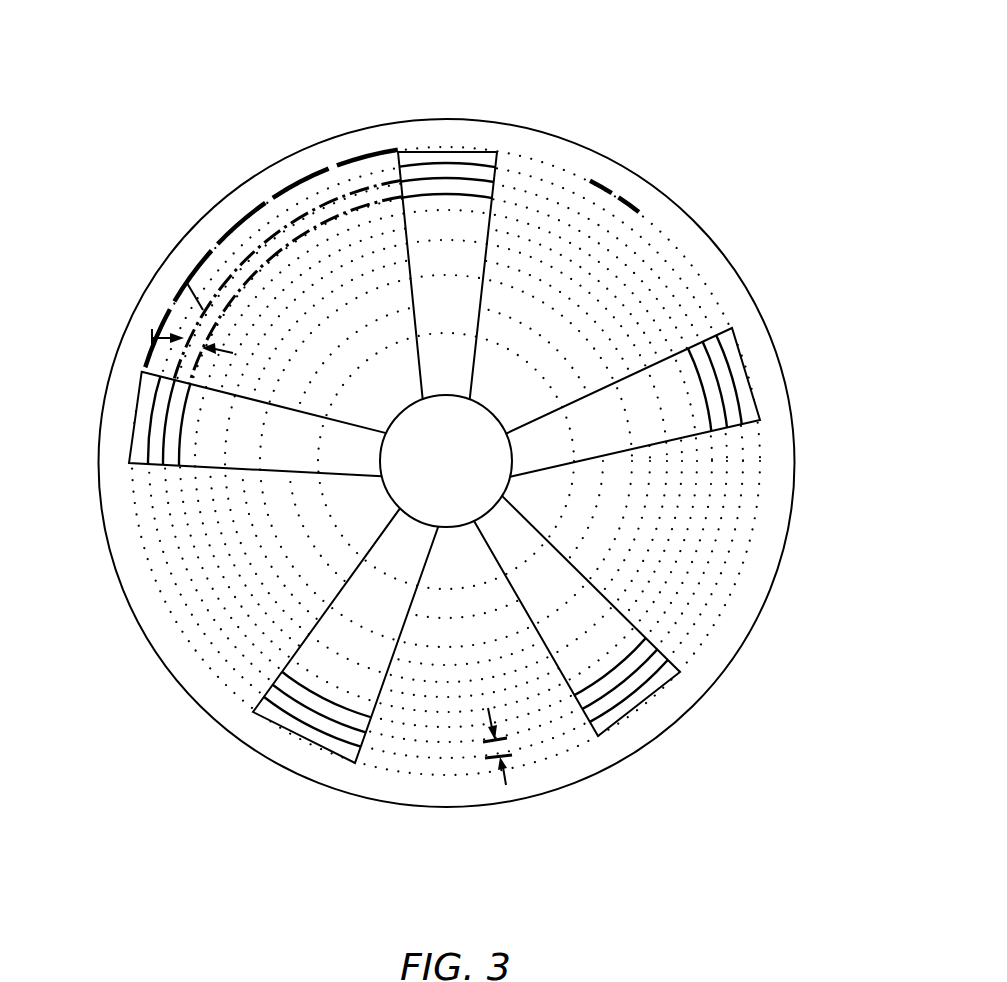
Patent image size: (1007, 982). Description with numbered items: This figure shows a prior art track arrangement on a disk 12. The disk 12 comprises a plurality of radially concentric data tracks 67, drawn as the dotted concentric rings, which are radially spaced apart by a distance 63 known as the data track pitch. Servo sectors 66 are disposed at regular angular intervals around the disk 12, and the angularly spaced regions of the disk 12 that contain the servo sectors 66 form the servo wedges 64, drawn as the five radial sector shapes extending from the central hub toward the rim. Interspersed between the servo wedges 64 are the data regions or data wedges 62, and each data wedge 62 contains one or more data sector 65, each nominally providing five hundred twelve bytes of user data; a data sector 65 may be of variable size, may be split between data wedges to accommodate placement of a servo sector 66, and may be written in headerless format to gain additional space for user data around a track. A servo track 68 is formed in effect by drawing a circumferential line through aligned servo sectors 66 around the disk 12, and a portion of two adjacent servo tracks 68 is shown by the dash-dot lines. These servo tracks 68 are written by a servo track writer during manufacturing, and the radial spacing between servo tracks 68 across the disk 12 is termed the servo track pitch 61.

The disk 12 is at (153, 146).
The servo track pitch 61 is at (152, 348).
The data wedge 62 is at (565, 180).
The data track pitch 63 is at (480, 752).
The servo wedge 64 is at (782, 353).
The data sector 65 is at (183, 290).
The servo sector 66 is at (437, 196).
The data track 67 is at (250, 572).
The servo track 68 is at (237, 290).